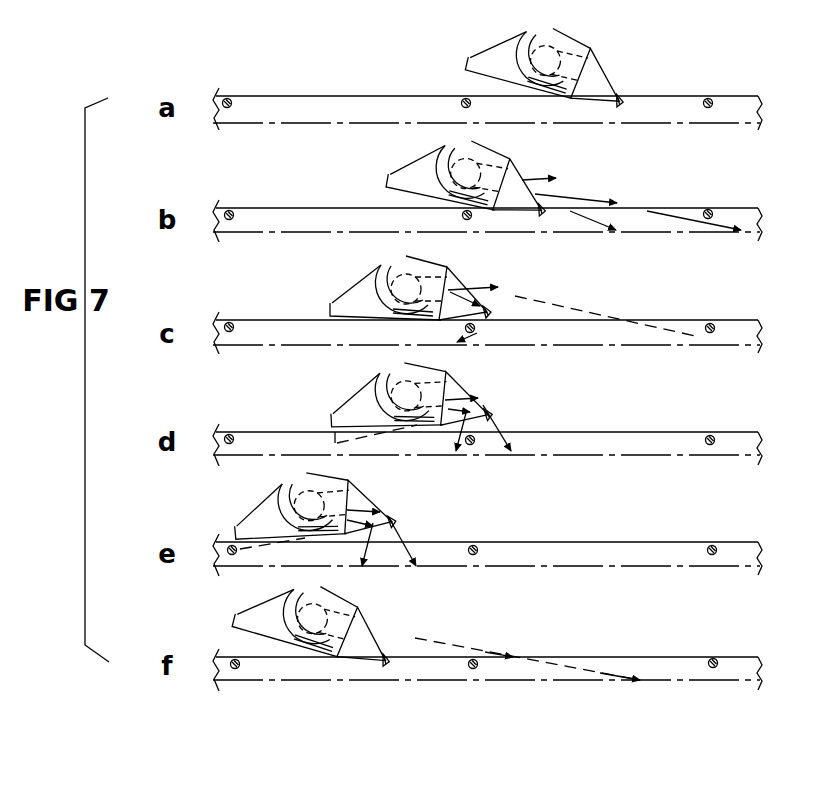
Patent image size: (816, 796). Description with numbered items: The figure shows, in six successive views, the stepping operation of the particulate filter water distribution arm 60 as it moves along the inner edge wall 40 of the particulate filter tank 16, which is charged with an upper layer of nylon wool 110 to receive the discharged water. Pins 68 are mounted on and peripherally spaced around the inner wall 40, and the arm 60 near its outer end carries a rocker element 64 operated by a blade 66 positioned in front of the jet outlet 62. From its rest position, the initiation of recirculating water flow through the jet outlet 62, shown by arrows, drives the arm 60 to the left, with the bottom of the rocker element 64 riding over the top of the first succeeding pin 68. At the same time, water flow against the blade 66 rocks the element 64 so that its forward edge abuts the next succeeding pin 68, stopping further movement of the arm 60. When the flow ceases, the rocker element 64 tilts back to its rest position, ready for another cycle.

The particulate filter tank 16 is at (320, 118).
The inner edge wall 40 is at (341, 96).
The particulate filter water distribution arm 60 is at (390, 386).
The jet outlet opening 62 is at (594, 41).
The rocker element 64 is at (258, 609).
The blade 66 is at (386, 656).
The pins 68 is at (715, 661).
The nylon wool layer 110 is at (390, 121).